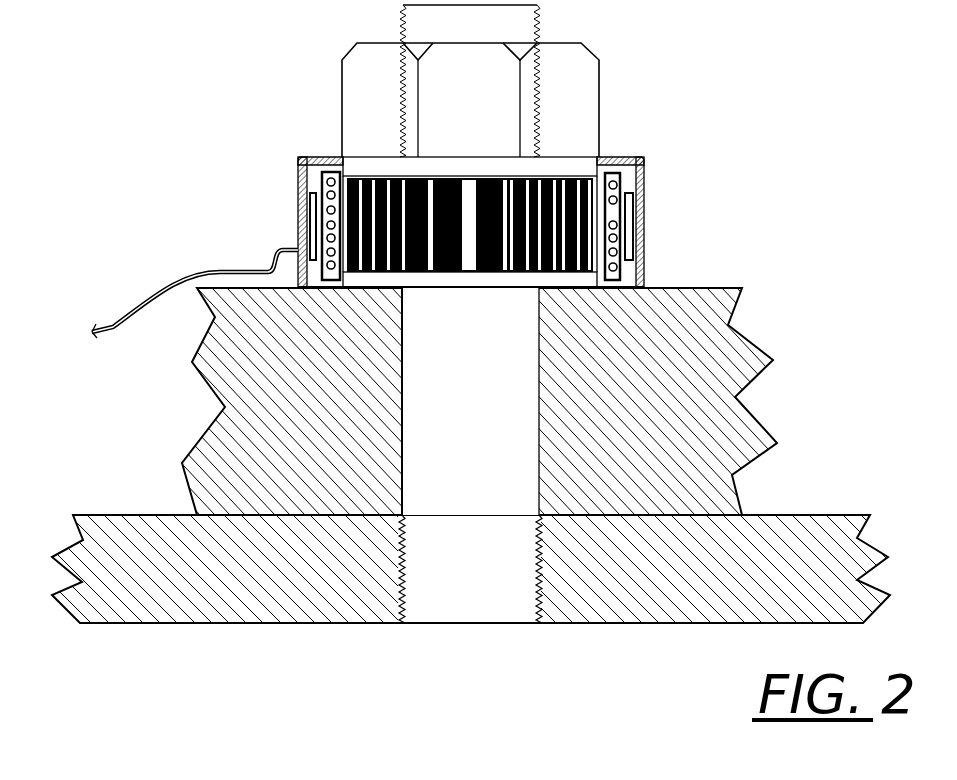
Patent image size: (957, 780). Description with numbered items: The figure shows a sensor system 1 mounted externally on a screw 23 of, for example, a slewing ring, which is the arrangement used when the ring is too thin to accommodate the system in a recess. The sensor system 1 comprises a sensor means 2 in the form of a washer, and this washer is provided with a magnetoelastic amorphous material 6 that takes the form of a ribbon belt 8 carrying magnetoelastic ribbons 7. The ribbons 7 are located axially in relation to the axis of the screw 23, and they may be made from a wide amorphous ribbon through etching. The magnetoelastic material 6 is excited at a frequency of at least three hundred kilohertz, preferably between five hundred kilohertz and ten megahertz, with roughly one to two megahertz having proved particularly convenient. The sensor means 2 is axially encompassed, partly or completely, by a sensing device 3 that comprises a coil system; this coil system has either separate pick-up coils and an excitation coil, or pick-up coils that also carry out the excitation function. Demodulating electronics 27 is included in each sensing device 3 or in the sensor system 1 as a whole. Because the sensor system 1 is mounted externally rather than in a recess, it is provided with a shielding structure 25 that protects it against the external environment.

The sensor system 1 is at (290, 140).
The sensor means 2 is at (530, 155).
The sensing device 3 is at (466, 208).
The magnetoelastic material 6 is at (547, 157).
The magnetoelastic ribbons 7 is at (648, 217).
The ribbon belt 8 is at (297, 217).
The screw 23 is at (493, 331).
The shielding structure 25 is at (647, 167).
The demodulating electronics 27 is at (297, 205).